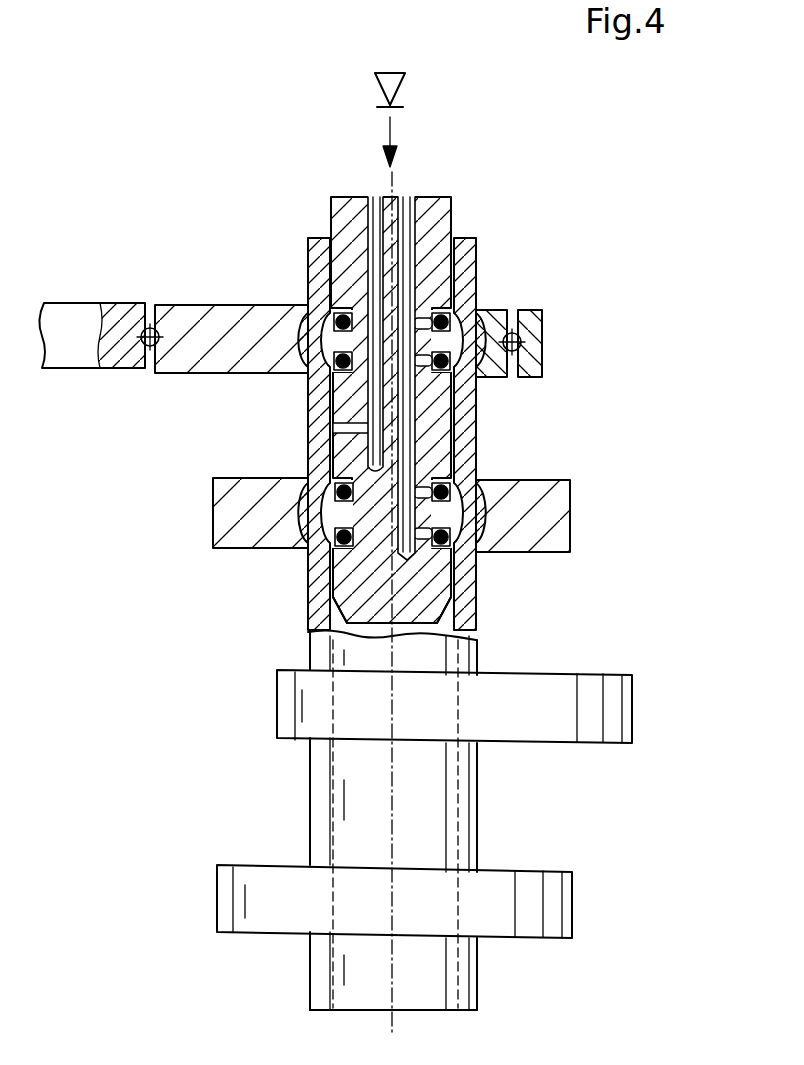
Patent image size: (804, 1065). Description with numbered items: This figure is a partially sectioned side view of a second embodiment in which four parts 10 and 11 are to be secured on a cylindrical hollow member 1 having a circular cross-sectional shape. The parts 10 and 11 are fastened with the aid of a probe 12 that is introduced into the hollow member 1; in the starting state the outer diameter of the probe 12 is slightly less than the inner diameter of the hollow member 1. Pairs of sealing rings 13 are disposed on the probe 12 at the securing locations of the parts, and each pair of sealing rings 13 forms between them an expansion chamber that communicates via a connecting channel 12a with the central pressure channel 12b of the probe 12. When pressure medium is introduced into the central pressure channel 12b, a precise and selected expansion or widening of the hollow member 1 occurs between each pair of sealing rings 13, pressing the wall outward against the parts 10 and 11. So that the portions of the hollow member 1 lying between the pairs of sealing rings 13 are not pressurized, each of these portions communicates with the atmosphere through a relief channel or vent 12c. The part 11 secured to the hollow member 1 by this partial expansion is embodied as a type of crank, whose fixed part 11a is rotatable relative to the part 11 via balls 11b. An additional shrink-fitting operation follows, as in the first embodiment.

The hollow member 1 is at (468, 438).
The parts 10 is at (572, 890).
The part 11 is at (247, 323).
The fixed part 11a is at (83, 317).
The balls 11b is at (145, 330).
The probe 12 is at (431, 389).
The connecting channel 12a is at (457, 580).
The central pressure channel 12b is at (413, 200).
The relief channel or vent 12c is at (380, 205).
The sealing rings 13 is at (298, 373).